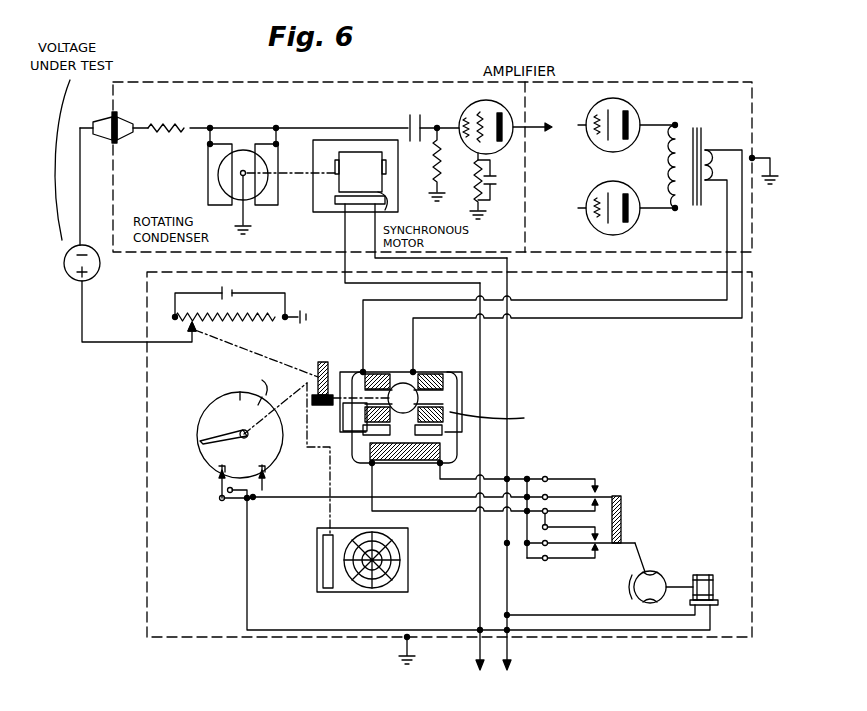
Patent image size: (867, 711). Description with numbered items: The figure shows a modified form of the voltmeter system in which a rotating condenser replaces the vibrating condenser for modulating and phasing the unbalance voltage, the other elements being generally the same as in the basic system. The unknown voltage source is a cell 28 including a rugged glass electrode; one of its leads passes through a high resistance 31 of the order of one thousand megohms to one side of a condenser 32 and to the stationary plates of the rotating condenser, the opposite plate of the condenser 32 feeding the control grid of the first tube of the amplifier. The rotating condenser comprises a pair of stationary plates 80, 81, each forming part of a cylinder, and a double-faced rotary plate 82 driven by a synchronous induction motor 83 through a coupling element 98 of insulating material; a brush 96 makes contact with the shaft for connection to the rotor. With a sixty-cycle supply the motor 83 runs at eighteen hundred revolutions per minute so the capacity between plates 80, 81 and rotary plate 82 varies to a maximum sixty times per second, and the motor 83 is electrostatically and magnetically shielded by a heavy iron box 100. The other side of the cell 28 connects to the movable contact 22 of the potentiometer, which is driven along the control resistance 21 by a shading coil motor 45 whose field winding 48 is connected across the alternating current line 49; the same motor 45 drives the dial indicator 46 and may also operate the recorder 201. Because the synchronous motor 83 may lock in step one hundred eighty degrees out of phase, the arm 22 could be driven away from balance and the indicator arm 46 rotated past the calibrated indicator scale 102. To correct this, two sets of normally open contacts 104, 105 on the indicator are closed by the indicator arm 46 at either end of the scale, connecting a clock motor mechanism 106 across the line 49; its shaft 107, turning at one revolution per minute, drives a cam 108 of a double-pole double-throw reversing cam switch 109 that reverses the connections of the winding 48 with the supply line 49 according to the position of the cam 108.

The cell 28 is at (70, 272).
The high resistance 31 is at (168, 125).
The condenser 32 is at (417, 113).
The stationary plate 80 is at (206, 199).
The stationary plate 81 is at (272, 204).
The rotary plate 82 is at (246, 150).
The brush 96 is at (240, 184).
The coupling element 98 is at (287, 173).
The iron box 100 is at (358, 140).
The synchronous induction motor 83 is at (361, 181).
The control resistance 21 is at (233, 323).
The movable contact 22 is at (190, 327).
The indicator scale 102 is at (197, 421).
The dial indicator 46 is at (200, 446).
The set of normally open contacts 104 is at (223, 478).
The set of normally open contacts 105 is at (258, 478).
The shading coil motor 45 is at (478, 431).
The field winding 48 is at (388, 463).
The alternating current line 49 is at (499, 672).
The reversing cam switch 109 is at (622, 502).
The cam 108 is at (652, 580).
The shaft 107 is at (672, 585).
The clock motor mechanism 106 is at (712, 578).
The recorder 201 is at (320, 568).